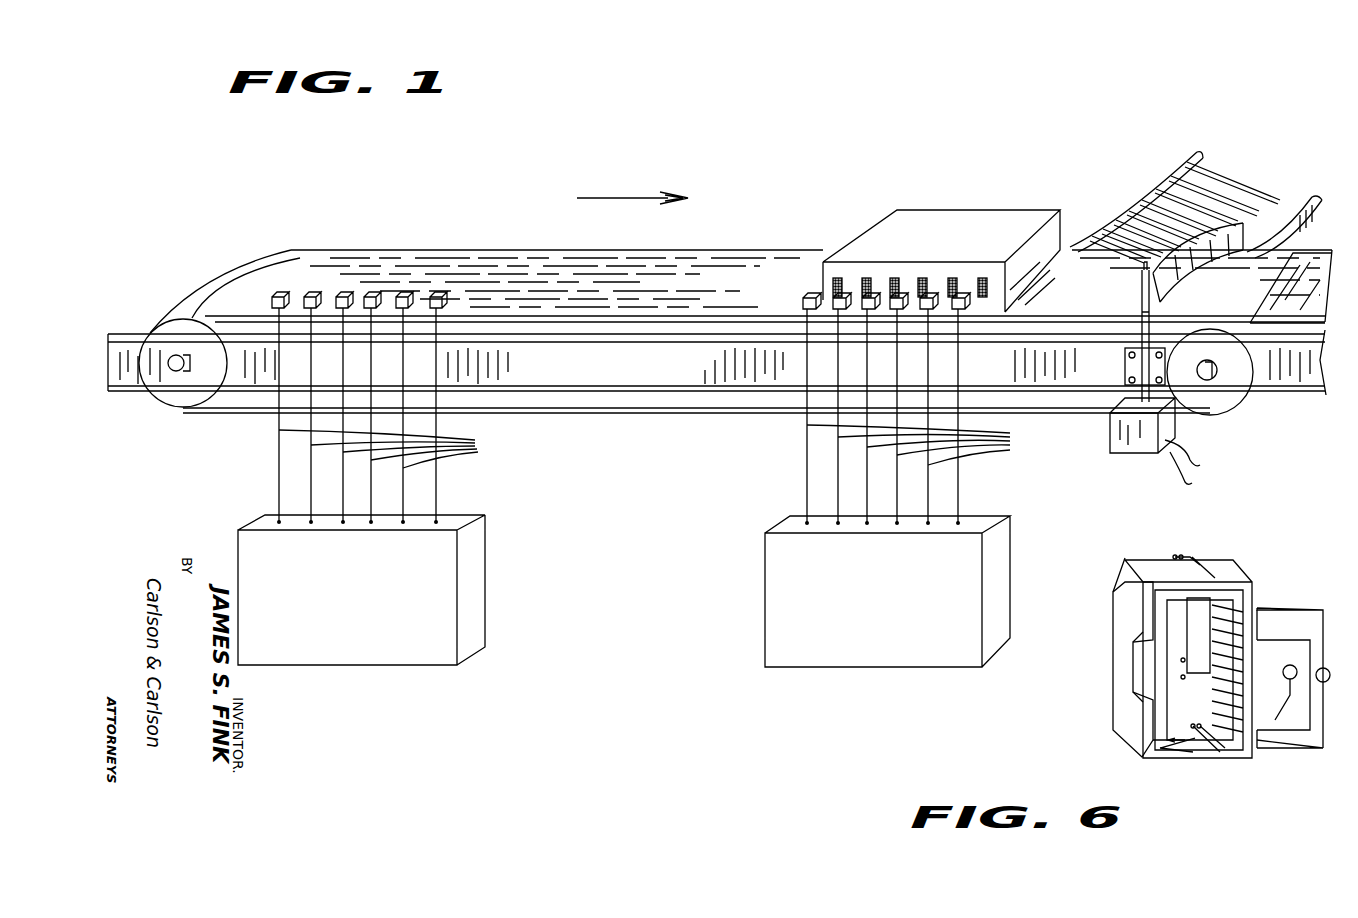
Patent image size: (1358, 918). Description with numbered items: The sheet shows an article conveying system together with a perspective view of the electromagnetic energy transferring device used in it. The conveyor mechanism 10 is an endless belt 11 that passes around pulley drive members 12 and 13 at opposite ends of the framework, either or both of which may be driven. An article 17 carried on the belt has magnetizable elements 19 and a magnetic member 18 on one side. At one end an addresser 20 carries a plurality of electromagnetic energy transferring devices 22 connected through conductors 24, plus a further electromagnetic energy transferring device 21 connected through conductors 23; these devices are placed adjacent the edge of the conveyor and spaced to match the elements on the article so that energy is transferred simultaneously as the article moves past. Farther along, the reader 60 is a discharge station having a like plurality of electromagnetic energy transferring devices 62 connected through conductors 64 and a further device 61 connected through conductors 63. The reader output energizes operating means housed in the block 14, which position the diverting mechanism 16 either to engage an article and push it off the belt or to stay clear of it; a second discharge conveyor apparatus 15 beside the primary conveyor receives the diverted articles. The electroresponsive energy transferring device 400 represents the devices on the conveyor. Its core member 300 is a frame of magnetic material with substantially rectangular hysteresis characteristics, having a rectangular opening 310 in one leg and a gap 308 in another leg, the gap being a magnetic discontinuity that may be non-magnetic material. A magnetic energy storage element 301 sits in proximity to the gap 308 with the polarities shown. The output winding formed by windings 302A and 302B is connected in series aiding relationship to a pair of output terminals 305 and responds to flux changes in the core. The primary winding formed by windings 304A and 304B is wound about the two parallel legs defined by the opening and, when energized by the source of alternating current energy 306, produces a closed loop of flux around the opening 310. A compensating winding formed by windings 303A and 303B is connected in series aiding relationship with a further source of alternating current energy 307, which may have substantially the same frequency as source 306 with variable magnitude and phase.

In FIG. 1, the conveyor mechanism 10 is at (720, 331).
In FIG. 1, the direction of belt travel 11 is at (540, 235).
In FIG. 1, the pulley drive member 12 is at (176, 315).
In FIG. 1, the pulley drive member 13 is at (1238, 382).
In FIG. 1, the block 14 is at (1145, 452).
In FIG. 1, the second discharge conveyor apparatus 15 is at (1142, 176).
In FIG. 1, the diverting mechanism 16 is at (1138, 297).
In FIG. 1, the article 17 is at (963, 230).
In FIG. 1, the magnetic member 18 is at (943, 262).
In FIG. 1, the magnetizable elements 19 is at (838, 278).
In FIG. 1, the addresser 20 is at (508, 580).
In FIG. 1, the electromagnetic energy transferring device 21 is at (440, 292).
In FIG. 1, the electromagnetic energy transferring devices 22 is at (282, 292).
In FIG. 1, the conductors 23 is at (436, 485).
In FIG. 1, the conductors 24 is at (389, 449).
In FIG. 1, the reader 60 is at (1044, 593).
In FIG. 1, the electromagnetic energy transferring device 61 is at (975, 312).
In FIG. 1, the electromagnetic energy transferring devices 62 is at (920, 312).
In FIG. 1, the conductors 63 is at (958, 493).
In FIG. 1, the conductors 64 is at (920, 445).
In FIG. 6, the core member 300 is at (1125, 565).
In FIG. 6, the magnetic energy storage element 301 is at (1112, 638).
In FIG. 6, the output winding 302A is at (1192, 557).
In FIG. 6, the output winding 302B is at (1217, 760).
In FIG. 6, the compensating winding 303A is at (1257, 608).
In FIG. 6, the compensating winding 303B is at (1257, 740).
In FIG. 6, the primary winding 304A is at (1197, 740).
In FIG. 6, the primary winding 304B is at (1193, 740).
In FIG. 6, the output terminals 305 is at (1183, 677).
In FIG. 6, the source of alternating current energy 306 is at (1283, 685).
In FIG. 6, the source of alternating current energy 307 is at (1318, 750).
In FIG. 6, the gap 308 is at (1183, 660).
In FIG. 6, the rectangular opening 310 is at (1240, 650).
In FIG. 6, the electroresponsive energy transferring device 400 is at (1118, 760).